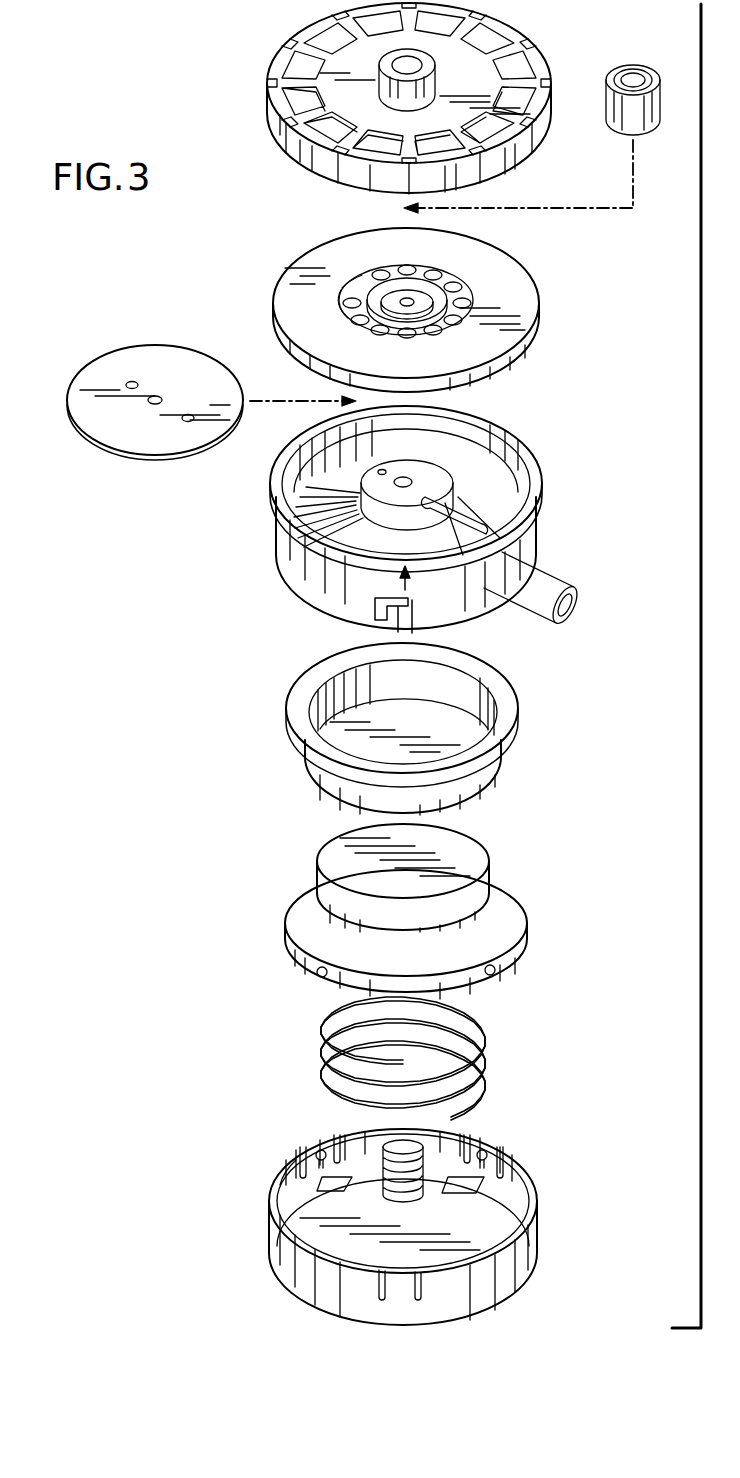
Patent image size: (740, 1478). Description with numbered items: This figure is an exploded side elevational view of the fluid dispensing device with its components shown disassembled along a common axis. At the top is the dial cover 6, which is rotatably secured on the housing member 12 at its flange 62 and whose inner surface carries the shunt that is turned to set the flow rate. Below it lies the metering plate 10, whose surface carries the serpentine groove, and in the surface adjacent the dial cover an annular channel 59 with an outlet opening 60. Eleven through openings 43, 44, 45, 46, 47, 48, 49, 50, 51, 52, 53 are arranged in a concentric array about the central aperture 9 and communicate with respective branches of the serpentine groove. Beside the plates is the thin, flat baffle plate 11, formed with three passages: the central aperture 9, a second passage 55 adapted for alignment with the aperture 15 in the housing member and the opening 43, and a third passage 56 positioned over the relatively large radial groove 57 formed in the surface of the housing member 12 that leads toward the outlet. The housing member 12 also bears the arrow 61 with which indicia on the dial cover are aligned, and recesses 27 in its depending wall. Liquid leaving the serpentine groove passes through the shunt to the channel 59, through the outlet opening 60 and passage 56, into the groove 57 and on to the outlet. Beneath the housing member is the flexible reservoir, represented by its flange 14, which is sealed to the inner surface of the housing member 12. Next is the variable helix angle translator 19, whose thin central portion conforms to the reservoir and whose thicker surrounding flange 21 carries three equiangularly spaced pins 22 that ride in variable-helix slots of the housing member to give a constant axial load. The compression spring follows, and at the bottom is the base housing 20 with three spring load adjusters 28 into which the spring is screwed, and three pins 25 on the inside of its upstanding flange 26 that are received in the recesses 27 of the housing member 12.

The dial cover 6 is at (460, 67).
The flange 62 is at (517, 150).
The metering plate 10 is at (532, 280).
The opening 43 is at (381, 275).
The opening 44 is at (407, 270).
The opening 45 is at (433, 275).
The opening 46 is at (445, 300).
The opening 47 is at (453, 288).
The opening 48 is at (462, 305).
The opening 49 is at (432, 329).
The opening 50 is at (407, 333).
The opening 51 is at (360, 320).
The opening 52 is at (352, 303).
The opening 53 is at (340, 297).
The annular channel 59 is at (444, 300).
The outlet opening 60 is at (452, 320).
The baffle plate 11 is at (165, 346).
The second passage 55 is at (130, 383).
The central aperture 9 is at (152, 402).
The third passage 56 is at (188, 422).
The housing member 12 is at (542, 545).
The second aperture 15 is at (383, 470).
The groove 57 is at (507, 518).
The arrow 61 is at (405, 590).
The recess 27 is at (415, 628).
The flange 14 is at (512, 712).
The variable helix angle translator 19 is at (466, 857).
The flange 21 is at (510, 907).
The pin 22 is at (318, 975).
The base housing 20 is at (520, 1280).
The spring load adjuster 28 is at (420, 1150).
The pin 25 is at (318, 1148).
The upstanding flange 26 is at (290, 1175).